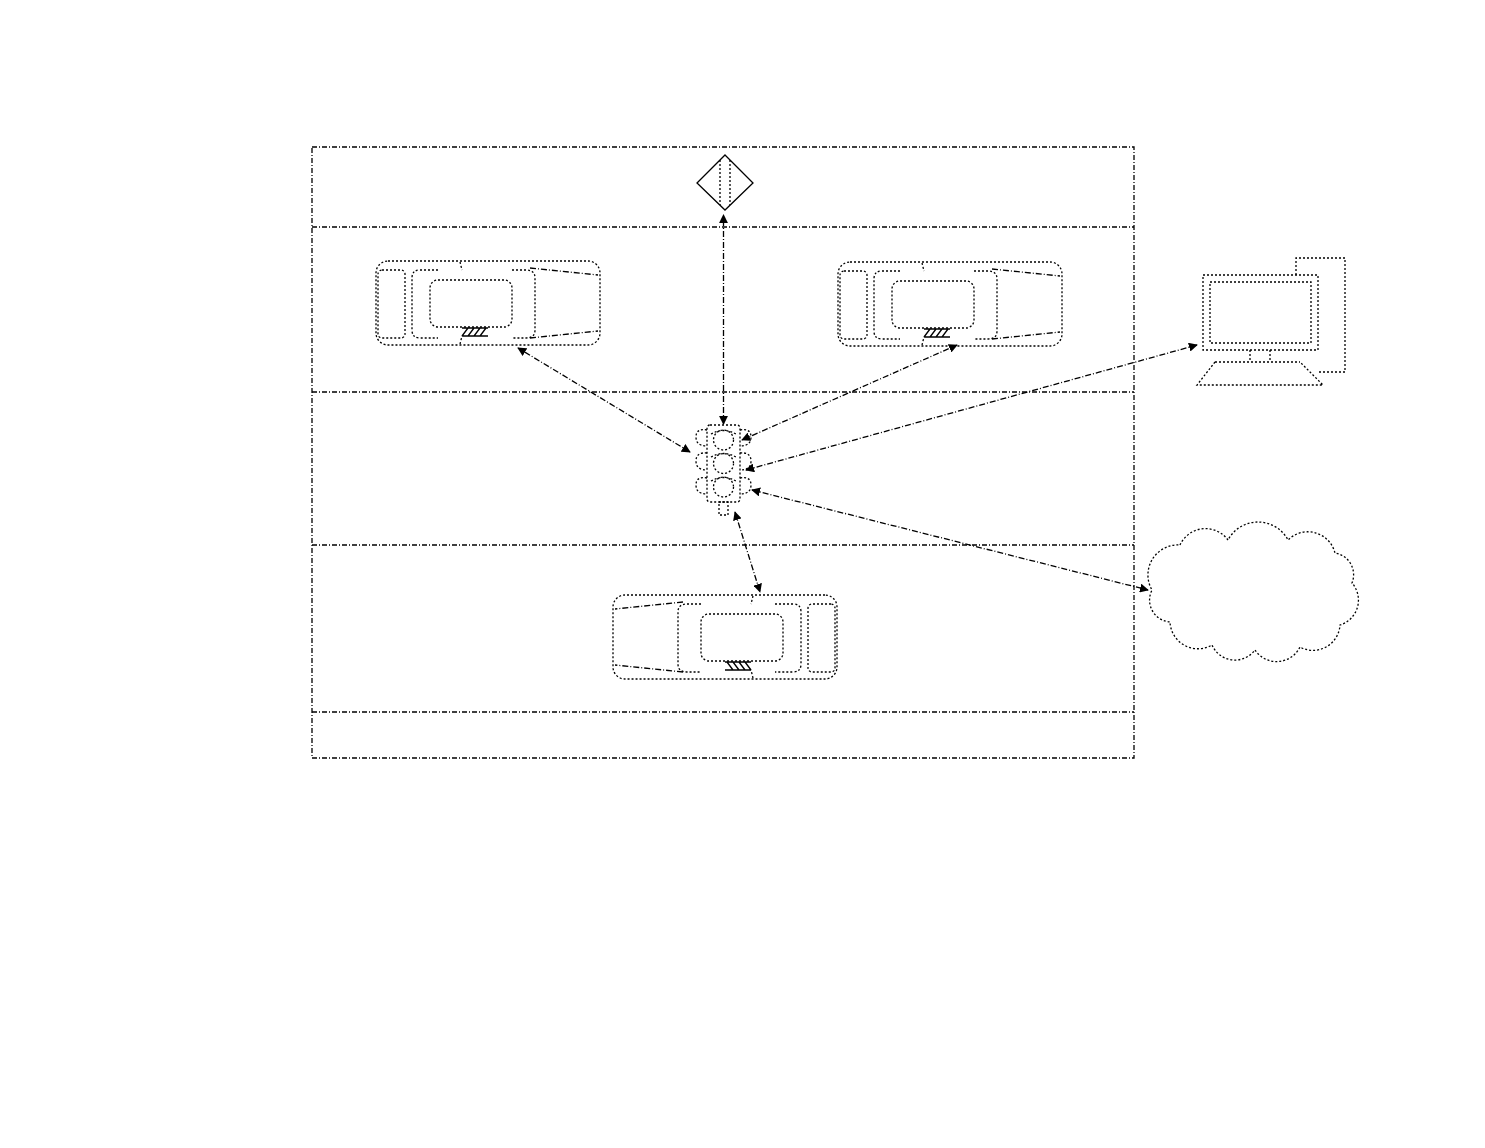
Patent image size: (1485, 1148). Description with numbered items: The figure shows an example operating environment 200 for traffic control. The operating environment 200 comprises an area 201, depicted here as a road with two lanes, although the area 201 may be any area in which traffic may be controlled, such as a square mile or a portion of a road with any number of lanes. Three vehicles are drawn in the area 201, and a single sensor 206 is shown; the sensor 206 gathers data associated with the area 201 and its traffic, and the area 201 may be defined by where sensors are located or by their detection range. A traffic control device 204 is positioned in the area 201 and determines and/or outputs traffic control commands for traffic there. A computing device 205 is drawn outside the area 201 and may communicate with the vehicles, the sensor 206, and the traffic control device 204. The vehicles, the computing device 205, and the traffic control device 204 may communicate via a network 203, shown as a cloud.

The operating environment 200 is at (196, 212).
The area 201 is at (290, 711).
The network 203 is at (1276, 602).
The traffic control device 204 is at (711, 529).
The computing device 205 is at (1212, 419).
The sensor 206 is at (805, 206).